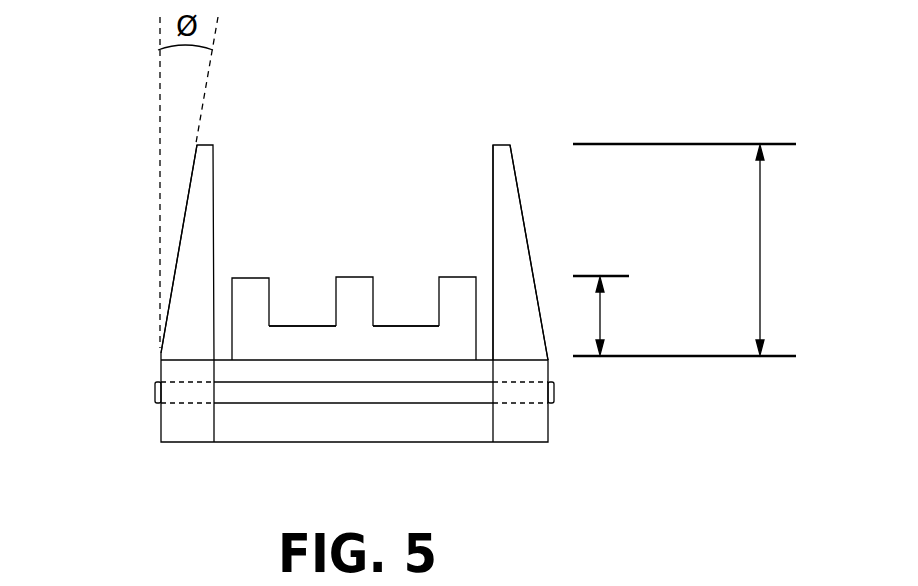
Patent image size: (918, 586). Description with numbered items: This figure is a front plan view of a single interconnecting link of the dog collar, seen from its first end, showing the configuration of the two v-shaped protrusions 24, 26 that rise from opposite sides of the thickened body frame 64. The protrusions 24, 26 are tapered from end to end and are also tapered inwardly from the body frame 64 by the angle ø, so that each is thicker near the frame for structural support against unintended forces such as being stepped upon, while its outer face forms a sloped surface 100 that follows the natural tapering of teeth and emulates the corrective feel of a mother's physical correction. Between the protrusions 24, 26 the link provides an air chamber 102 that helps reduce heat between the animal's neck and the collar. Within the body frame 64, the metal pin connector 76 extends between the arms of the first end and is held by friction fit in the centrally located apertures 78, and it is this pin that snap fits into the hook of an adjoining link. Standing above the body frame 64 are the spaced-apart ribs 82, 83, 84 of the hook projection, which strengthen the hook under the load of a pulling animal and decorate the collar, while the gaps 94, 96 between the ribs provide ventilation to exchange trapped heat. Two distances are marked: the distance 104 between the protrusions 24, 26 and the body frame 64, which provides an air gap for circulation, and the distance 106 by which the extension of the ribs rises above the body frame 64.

The v-shaped protrusion 24 is at (207, 143).
The v-shaped protrusion 26 is at (500, 144).
The body frame 64 is at (308, 345).
The metal pin connector 76 is at (242, 403).
The aperture 78 is at (161, 420).
The rib 82 is at (455, 277).
The rib 83 is at (359, 277).
The rib 84 is at (250, 278).
The gap 94 is at (408, 326).
The gap 96 is at (297, 326).
The sloped surface 100 is at (175, 263).
The air chamber 102 is at (491, 213).
The distance between protrusions and body frame 104 is at (760, 243).
The distance of rib extension above body frame 106 is at (600, 318).